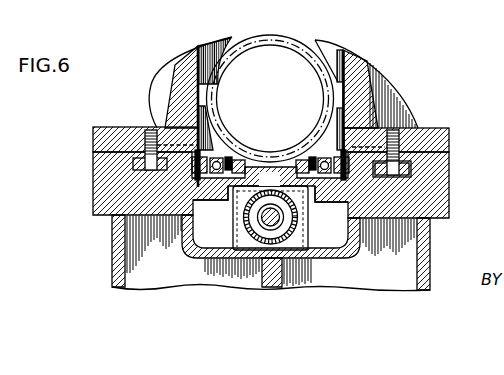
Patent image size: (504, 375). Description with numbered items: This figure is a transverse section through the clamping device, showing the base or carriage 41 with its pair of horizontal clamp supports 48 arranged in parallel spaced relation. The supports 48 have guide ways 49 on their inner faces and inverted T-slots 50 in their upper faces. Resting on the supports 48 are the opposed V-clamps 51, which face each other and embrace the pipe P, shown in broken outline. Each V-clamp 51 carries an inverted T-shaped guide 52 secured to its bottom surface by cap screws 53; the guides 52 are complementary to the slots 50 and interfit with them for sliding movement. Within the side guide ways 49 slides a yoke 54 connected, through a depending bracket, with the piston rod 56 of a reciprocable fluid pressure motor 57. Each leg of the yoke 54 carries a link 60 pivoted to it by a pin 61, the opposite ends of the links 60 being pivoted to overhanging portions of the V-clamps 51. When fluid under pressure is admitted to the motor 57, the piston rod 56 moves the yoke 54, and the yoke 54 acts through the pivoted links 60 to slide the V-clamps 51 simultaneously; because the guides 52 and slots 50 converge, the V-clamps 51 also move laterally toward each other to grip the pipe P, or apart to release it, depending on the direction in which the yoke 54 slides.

The pipe P is at (277, 36).
The V-clamps 51 is at (329, 43).
The cap screws 53 is at (140, 133).
The inverted T-shaped guide 52 is at (147, 152).
The inverted T-slots 50 is at (408, 176).
The horizontal clamp supports 48 is at (97, 186).
The link 60 is at (335, 150).
The pin 61 is at (318, 152).
The piston rod 56 is at (268, 211).
The reciprocable fluid pressure motor 57 is at (296, 229).
The yoke 54 is at (226, 203).
The guide ways 49 is at (318, 204).
The base or carriage 41 is at (430, 247).